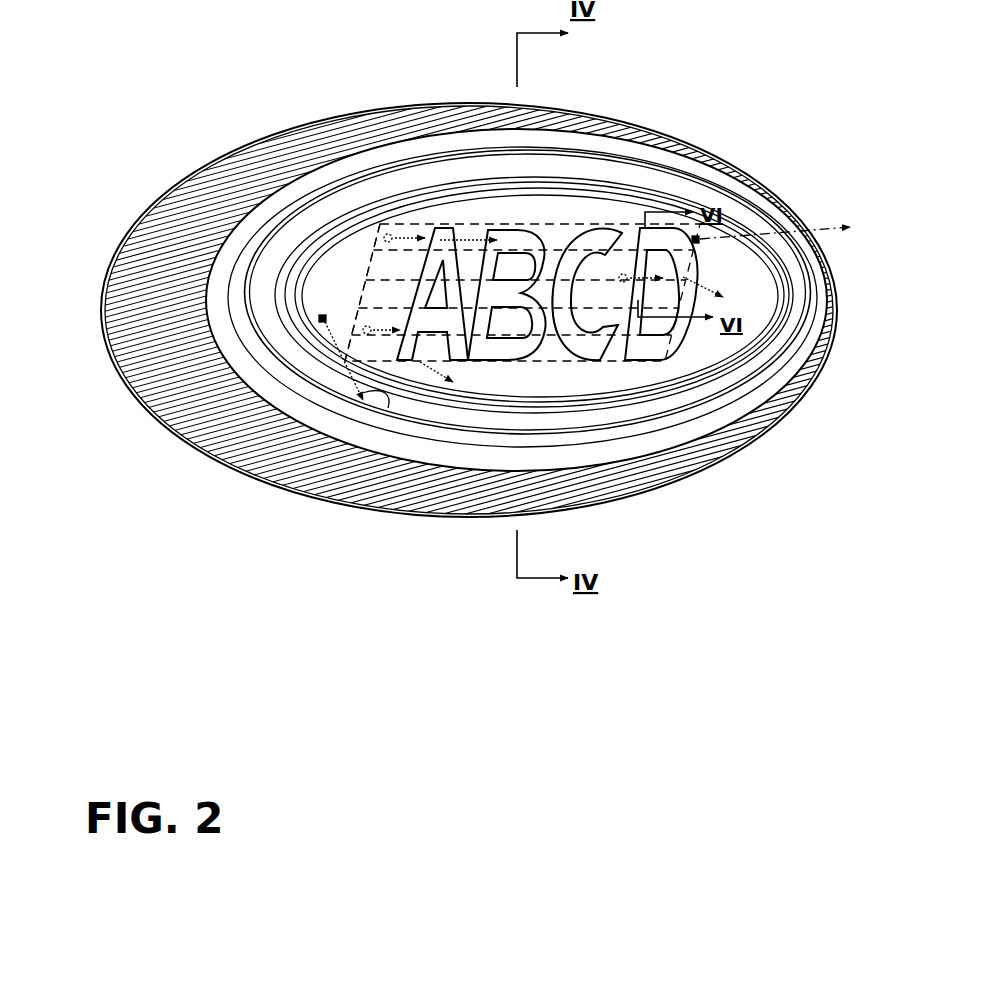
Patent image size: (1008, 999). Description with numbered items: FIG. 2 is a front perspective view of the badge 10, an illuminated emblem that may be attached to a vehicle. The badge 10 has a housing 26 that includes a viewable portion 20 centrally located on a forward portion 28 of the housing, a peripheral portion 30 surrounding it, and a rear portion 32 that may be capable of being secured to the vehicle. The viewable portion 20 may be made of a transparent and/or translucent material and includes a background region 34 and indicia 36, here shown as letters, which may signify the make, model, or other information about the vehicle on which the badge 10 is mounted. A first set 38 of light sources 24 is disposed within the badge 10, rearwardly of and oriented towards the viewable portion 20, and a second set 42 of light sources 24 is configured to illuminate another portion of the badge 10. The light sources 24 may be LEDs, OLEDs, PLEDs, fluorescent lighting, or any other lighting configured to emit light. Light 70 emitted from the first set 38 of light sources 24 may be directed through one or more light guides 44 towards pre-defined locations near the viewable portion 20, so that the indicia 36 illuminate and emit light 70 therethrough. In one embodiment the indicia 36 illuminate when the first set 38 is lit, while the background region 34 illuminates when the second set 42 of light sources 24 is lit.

The badge 10 is at (193, 148).
The viewable portion 20 is at (617, 224).
The light sources 24 is at (320, 328).
The housing 26 is at (103, 255).
The forward portion 28 is at (708, 352).
The peripheral portion 30 is at (218, 394).
The rear portion 32 is at (120, 386).
The background region 34 is at (345, 272).
The indicia 36 is at (573, 226).
The first set of light sources 38 is at (402, 232).
The second set of light sources 42 is at (317, 322).
The light guides 44 is at (352, 307).
The light 70 is at (388, 408).